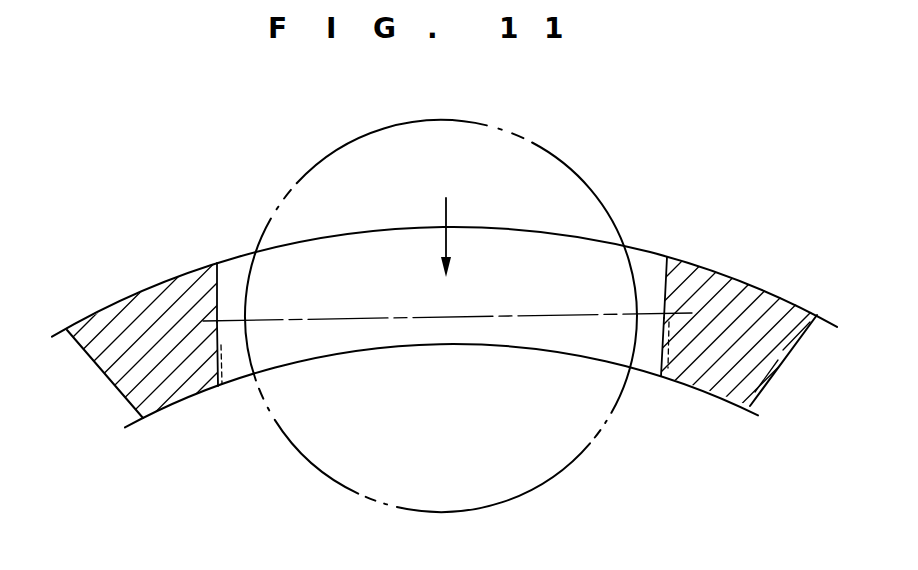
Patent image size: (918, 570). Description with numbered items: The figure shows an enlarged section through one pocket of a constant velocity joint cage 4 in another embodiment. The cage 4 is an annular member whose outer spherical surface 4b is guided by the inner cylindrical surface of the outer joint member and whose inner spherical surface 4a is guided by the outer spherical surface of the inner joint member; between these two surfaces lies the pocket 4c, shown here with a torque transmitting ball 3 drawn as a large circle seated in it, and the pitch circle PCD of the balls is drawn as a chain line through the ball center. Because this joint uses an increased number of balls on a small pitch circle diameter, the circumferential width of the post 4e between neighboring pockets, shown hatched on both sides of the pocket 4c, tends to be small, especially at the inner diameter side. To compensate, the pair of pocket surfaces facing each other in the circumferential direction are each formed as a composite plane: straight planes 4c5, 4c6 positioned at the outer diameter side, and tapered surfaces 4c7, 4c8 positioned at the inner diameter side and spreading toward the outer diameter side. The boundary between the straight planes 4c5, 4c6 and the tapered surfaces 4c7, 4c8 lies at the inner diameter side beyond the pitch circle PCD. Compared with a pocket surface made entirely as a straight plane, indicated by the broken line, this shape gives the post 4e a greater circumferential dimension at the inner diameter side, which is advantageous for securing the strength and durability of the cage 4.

The torque transmitting ball 3 is at (302, 180).
The cage 4 is at (459, 304).
The inner spherical surface 4a is at (315, 360).
The outer spherical surface 4b is at (337, 237).
The pocket 4c is at (447, 215).
The straight plane 4c5 is at (217, 287).
The straight plane 4c6 is at (663, 277).
The tapered surface 4c7 is at (220, 360).
The tapered surface 4c8 is at (660, 350).
The post 4e is at (153, 303).
The pitch circle PCD is at (457, 318).